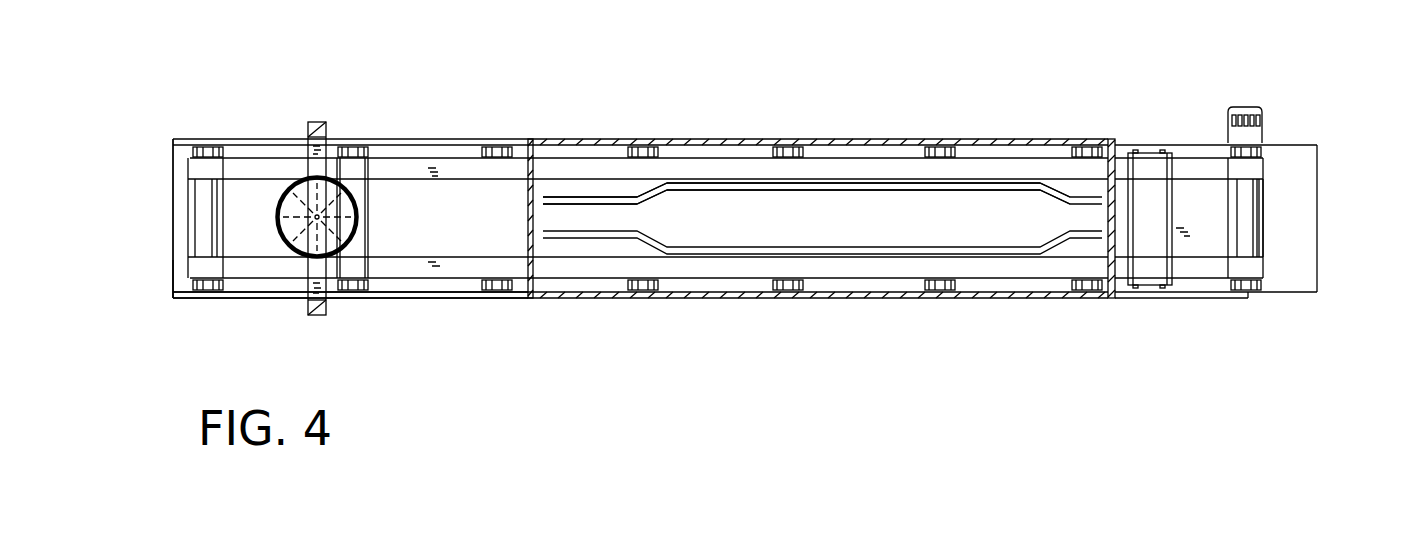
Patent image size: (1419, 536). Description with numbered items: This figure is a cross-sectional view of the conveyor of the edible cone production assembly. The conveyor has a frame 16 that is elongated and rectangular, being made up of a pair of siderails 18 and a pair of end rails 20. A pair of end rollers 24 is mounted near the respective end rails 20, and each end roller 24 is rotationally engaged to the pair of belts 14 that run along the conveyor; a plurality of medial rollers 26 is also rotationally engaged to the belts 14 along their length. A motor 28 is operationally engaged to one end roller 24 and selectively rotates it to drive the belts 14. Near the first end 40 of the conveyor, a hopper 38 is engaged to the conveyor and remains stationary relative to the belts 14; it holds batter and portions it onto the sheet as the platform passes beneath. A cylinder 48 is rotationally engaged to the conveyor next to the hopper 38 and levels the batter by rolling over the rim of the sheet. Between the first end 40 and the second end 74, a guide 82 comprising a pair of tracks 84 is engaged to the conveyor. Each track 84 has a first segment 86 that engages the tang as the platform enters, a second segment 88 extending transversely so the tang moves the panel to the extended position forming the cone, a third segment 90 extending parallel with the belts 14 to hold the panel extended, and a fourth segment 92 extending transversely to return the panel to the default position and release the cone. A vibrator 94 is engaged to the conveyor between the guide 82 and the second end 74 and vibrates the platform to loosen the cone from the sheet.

The belt 14 is at (432, 257).
The frame 16 is at (1285, 296).
The siderail 18 is at (253, 152).
The end rail 20 is at (172, 188).
The end roller 24 is at (203, 227).
The medial roller 26 is at (497, 162).
The motor 28 is at (1238, 110).
The hopper 38 is at (307, 188).
The first end 40 is at (170, 262).
The cylinder 48 is at (358, 173).
The second end 74 is at (1266, 222).
The guide 82 is at (867, 196).
The track 84 is at (908, 257).
The first segment 86 is at (590, 192).
The second segment 88 is at (647, 184).
The third segment 90 is at (880, 182).
The fourth segment 92 is at (1077, 195).
The vibrator 94 is at (1138, 210).